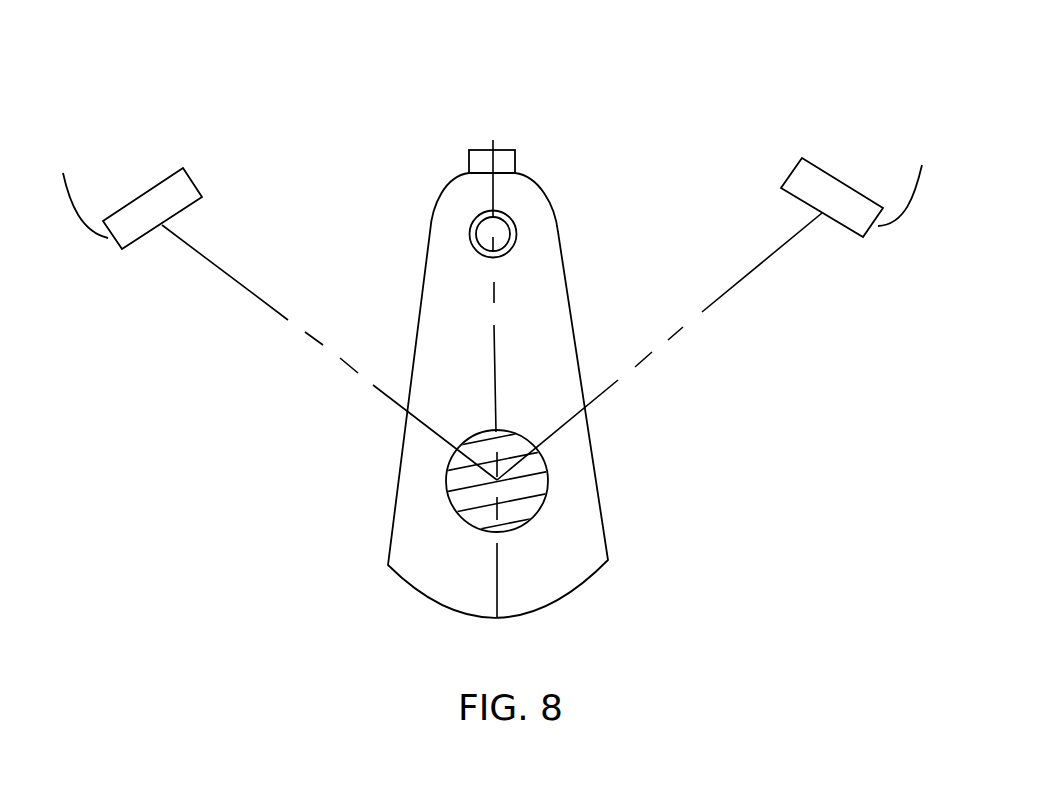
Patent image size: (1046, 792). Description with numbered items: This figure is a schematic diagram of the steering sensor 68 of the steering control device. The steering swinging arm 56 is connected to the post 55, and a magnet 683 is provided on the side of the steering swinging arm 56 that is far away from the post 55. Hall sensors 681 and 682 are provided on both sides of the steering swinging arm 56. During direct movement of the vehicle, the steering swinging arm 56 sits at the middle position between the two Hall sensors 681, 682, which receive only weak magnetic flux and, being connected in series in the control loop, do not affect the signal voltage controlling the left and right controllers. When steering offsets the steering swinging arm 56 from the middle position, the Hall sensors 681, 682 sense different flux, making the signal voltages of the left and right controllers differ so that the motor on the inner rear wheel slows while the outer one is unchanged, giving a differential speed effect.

The steering sensor 68 is at (663, 95).
The steering swinging arm 56 is at (550, 322).
The magnet 683 is at (505, 155).
The post 55 is at (545, 492).
The Hall sensor 682 is at (182, 188).
The Hall sensor 681 is at (803, 173).